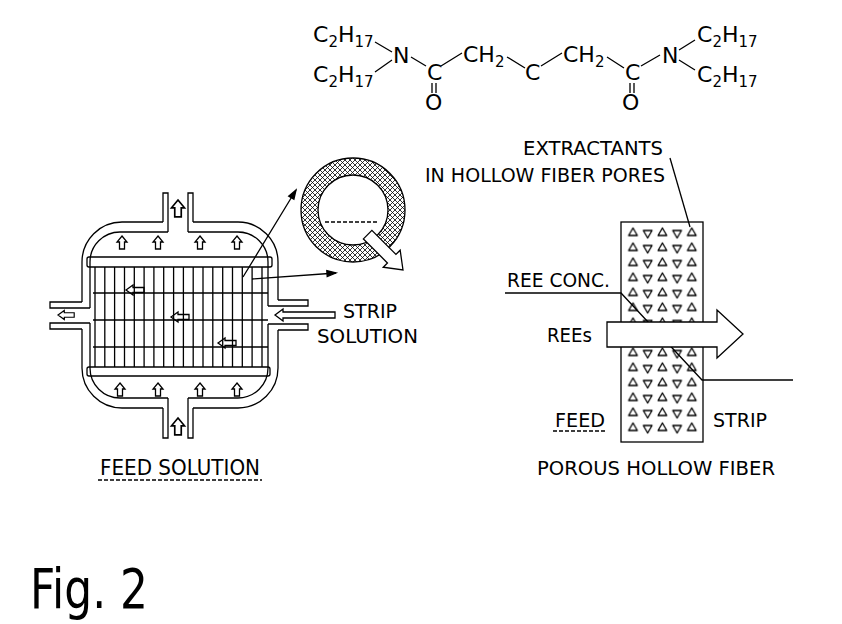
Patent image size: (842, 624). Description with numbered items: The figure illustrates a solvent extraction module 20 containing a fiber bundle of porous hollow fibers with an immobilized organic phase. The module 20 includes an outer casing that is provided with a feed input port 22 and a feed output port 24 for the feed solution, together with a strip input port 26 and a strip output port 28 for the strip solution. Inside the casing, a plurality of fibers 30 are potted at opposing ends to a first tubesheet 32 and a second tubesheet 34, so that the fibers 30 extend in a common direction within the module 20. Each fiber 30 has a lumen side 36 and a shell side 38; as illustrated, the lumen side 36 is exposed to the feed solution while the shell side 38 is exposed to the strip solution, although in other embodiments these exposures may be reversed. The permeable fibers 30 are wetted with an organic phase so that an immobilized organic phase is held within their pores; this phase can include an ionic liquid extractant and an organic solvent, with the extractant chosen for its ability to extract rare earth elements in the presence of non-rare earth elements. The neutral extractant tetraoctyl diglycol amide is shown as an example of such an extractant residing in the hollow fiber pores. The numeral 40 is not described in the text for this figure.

The module 20 is at (97, 232).
The feed input port 22 is at (195, 427).
The feed output port 24 is at (163, 210).
The strip input port 26 is at (290, 330).
The strip output port 28 is at (72, 303).
The fibers 30 is at (113, 355).
The first tubesheet 32 is at (103, 376).
The second tubesheet 34 is at (210, 260).
The lumen side 36 is at (372, 180).
The shell side 38 is at (400, 238).
The extraction system 40 is at (261, 621).